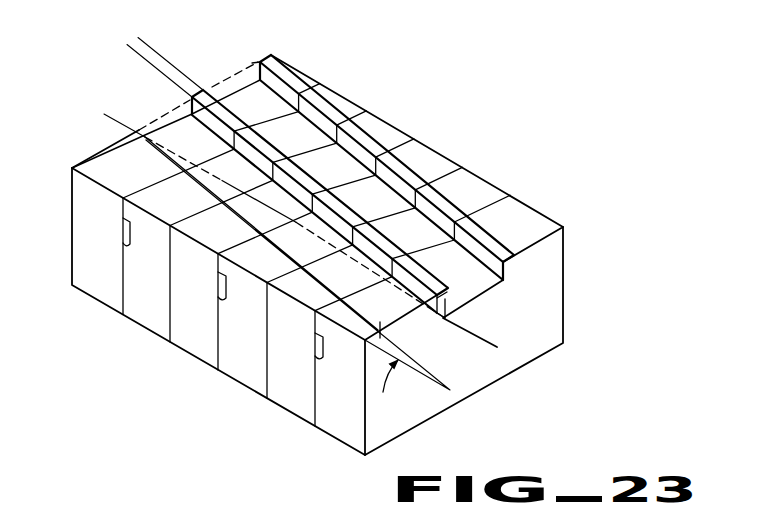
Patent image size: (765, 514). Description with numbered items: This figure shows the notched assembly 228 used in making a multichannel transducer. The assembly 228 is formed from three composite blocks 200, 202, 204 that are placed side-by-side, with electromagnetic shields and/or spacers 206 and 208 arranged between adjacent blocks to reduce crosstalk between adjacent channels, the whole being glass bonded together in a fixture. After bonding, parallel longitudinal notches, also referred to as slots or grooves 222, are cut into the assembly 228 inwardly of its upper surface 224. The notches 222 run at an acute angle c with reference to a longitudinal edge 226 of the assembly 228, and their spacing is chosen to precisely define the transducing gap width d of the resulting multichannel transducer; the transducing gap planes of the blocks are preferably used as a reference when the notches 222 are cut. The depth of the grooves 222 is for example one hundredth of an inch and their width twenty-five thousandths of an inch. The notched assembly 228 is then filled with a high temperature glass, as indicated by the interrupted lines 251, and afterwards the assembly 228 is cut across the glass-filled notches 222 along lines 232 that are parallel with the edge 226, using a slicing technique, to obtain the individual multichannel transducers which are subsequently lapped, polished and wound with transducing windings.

The composite block 200 is at (115, 275).
The composite block 202 is at (210, 328).
The composite block 204 is at (310, 386).
The electromagnetic shield or spacer 206 is at (170, 283).
The electromagnetic shield or spacer 208 is at (268, 344).
The notches 222 is at (229, 97).
The upper surface 224 is at (534, 214).
The longitudinal edge 226 is at (153, 214).
The assembly 228 is at (231, 56).
The cutting lines 232 is at (517, 282).
The interrupted lines 251 is at (253, 62).
The transducing gap width d is at (160, 32).
The acute angle c is at (412, 356).